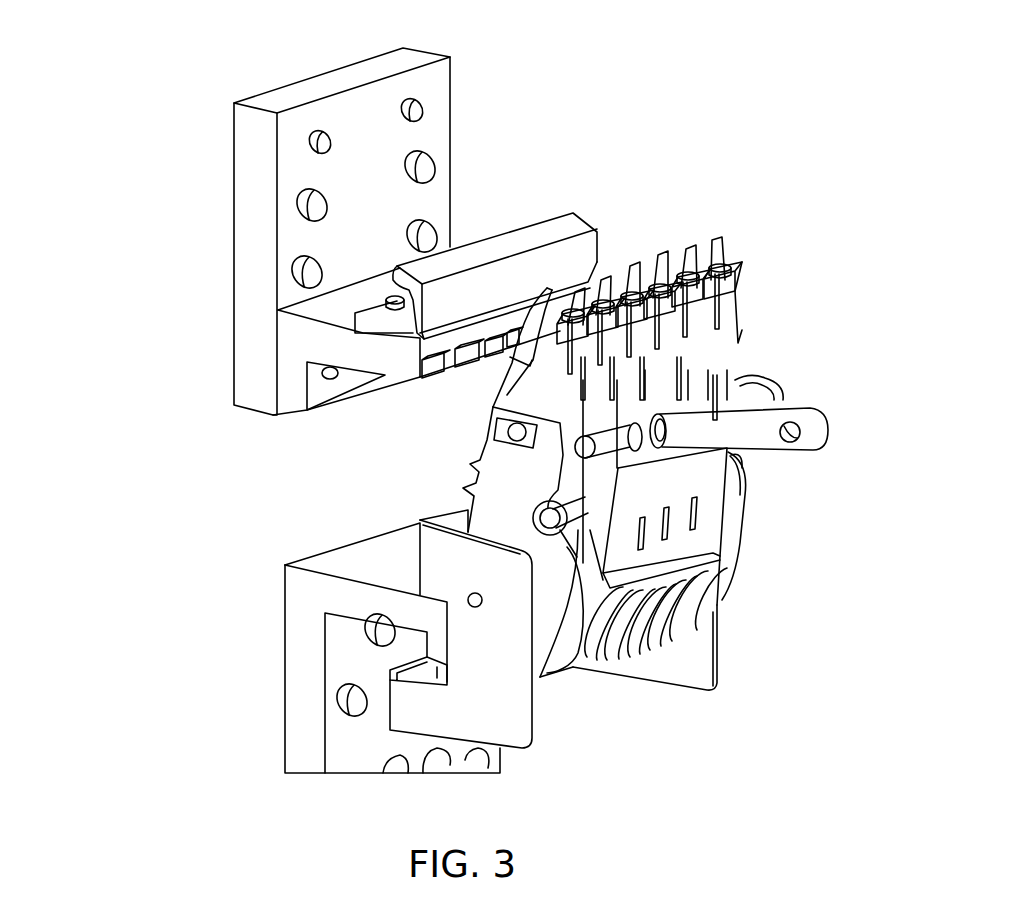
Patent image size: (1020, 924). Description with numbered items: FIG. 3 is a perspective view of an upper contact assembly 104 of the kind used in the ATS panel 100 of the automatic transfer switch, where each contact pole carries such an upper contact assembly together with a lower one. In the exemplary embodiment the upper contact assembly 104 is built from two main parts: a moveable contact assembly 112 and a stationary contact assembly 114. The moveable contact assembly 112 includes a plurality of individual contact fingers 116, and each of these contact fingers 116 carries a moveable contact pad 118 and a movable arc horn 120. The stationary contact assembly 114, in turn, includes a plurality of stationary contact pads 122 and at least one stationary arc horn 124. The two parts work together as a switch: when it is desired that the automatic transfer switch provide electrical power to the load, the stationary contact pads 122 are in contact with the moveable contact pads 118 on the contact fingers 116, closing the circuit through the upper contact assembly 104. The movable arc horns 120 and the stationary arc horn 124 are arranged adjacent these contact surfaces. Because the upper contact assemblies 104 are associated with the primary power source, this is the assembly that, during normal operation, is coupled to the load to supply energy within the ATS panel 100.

The ATS panel 100 is at (172, 135).
The upper contact assembly 104 is at (762, 97).
The moveable contact assembly 112 is at (760, 490).
The stationary contact assembly 114 is at (251, 298).
The contact fingers 116 is at (672, 354).
The moveable contact pad 118 is at (490, 380).
The movable arc horn 120 is at (640, 258).
The stationary contact pads 122 is at (465, 368).
The stationary arc horn 124 is at (558, 223).